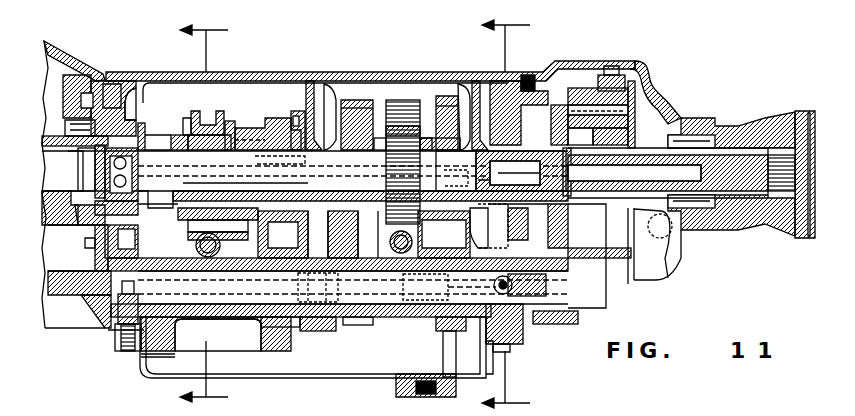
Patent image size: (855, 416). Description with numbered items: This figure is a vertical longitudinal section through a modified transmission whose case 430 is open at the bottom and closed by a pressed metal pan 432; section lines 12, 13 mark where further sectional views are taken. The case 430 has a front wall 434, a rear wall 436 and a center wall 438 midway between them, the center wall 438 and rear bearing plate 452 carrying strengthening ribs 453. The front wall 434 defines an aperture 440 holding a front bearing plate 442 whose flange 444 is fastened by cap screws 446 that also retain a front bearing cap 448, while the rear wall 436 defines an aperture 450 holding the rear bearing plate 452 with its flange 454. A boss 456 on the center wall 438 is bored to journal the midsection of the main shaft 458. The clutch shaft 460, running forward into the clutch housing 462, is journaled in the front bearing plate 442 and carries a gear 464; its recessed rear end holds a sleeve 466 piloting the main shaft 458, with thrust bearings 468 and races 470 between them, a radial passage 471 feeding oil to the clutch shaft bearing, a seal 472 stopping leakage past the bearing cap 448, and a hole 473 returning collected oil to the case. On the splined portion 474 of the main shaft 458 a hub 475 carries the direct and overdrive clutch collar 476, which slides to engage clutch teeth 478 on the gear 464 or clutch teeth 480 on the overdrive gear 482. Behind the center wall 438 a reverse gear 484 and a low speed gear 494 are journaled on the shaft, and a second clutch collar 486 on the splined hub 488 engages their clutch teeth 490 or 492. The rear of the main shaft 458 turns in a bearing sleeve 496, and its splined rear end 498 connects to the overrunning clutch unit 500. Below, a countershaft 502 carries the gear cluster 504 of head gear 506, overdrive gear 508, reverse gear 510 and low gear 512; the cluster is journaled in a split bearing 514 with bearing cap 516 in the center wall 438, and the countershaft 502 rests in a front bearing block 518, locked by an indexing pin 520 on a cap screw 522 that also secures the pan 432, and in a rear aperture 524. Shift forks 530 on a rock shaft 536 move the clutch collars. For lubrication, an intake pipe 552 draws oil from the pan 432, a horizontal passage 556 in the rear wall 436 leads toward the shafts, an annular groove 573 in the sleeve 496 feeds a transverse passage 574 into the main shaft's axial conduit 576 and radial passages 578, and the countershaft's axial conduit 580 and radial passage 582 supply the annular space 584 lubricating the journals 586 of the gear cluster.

The section line 12- 12 is at (216, 207).
The section line 13- 13 is at (518, 208).
The case 430 is at (365, 66).
The pressed metal pan 432 is at (292, 374).
The front wall 434 is at (130, 86).
The rear wall 436 is at (512, 70).
The center wall 438 is at (251, 98).
The aperture 440 is at (117, 68).
The front bearing plate 442 is at (130, 99).
The flange 444 is at (94, 66).
The cap screws 446 is at (72, 80).
The front bearing cap member 448 is at (78, 238).
The aperture 450 is at (576, 92).
The rear bearing plate 452 is at (580, 114).
The strengthening ribs 453 is at (300, 72).
The flange 454 is at (516, 330).
The boss 456 is at (286, 108).
The main shaft 458 is at (316, 182).
The clutch shaft 460 is at (68, 162).
The clutch housing 462 is at (76, 298).
The gear 464 is at (170, 100).
The sleeve of bearing material 466 is at (140, 130).
The thrust bearings 468 is at (100, 172).
The races 470 is at (122, 170).
The radial passage 471 is at (136, 194).
The seal 472 is at (70, 114).
The hole 473 is at (72, 222).
The splined portion 474 is at (172, 180).
The internally splined hub 475 is at (222, 218).
The direct and overdrive speed clutch collar 476 is at (216, 226).
The clutch teeth 478 is at (186, 112).
The clutch teeth 480 is at (219, 118).
The overdrive gear 482 is at (262, 122).
The reverse gear 484 is at (358, 98).
The second clutch collar 486 is at (404, 118).
The splined hub 488 is at (378, 172).
The clutch teeth 490 is at (376, 118).
The clutch teeth 492 is at (460, 152).
The low speed gear 494 is at (434, 88).
The sleeve of bearing material 496 is at (506, 202).
The splined rear end 498 is at (554, 231).
The overrunning clutch unit 500 is at (673, 66).
The countershaft 502 is at (262, 290).
The countershaft gear cluster 504 is at (250, 326).
The head gear 506 is at (158, 346).
The overdrive gear 508 is at (294, 342).
The reverse gear 510 is at (350, 318).
The low gear 512 is at (430, 324).
The bearing 514 is at (330, 268).
The bearing cap 516 is at (306, 326).
The bearing block 518 is at (100, 262).
The indexing pin 520 is at (128, 294).
The cap screw 522 is at (108, 342).
The aperture 524 is at (474, 322).
The shift forks 530 is at (213, 239).
The rock shaft 536 is at (190, 234).
The intake pipe 552 is at (432, 358).
The horizontal passage 556 is at (538, 278).
The annular groove 573 is at (492, 214).
The transverse passage 574 is at (486, 182).
The axial conduit 576 is at (447, 180).
The radial passages 578 is at (330, 155).
The axial conduit 580 is at (396, 286).
The radial passage 582 is at (396, 272).
The annular space 584 is at (210, 318).
The journals 586 is at (170, 264).